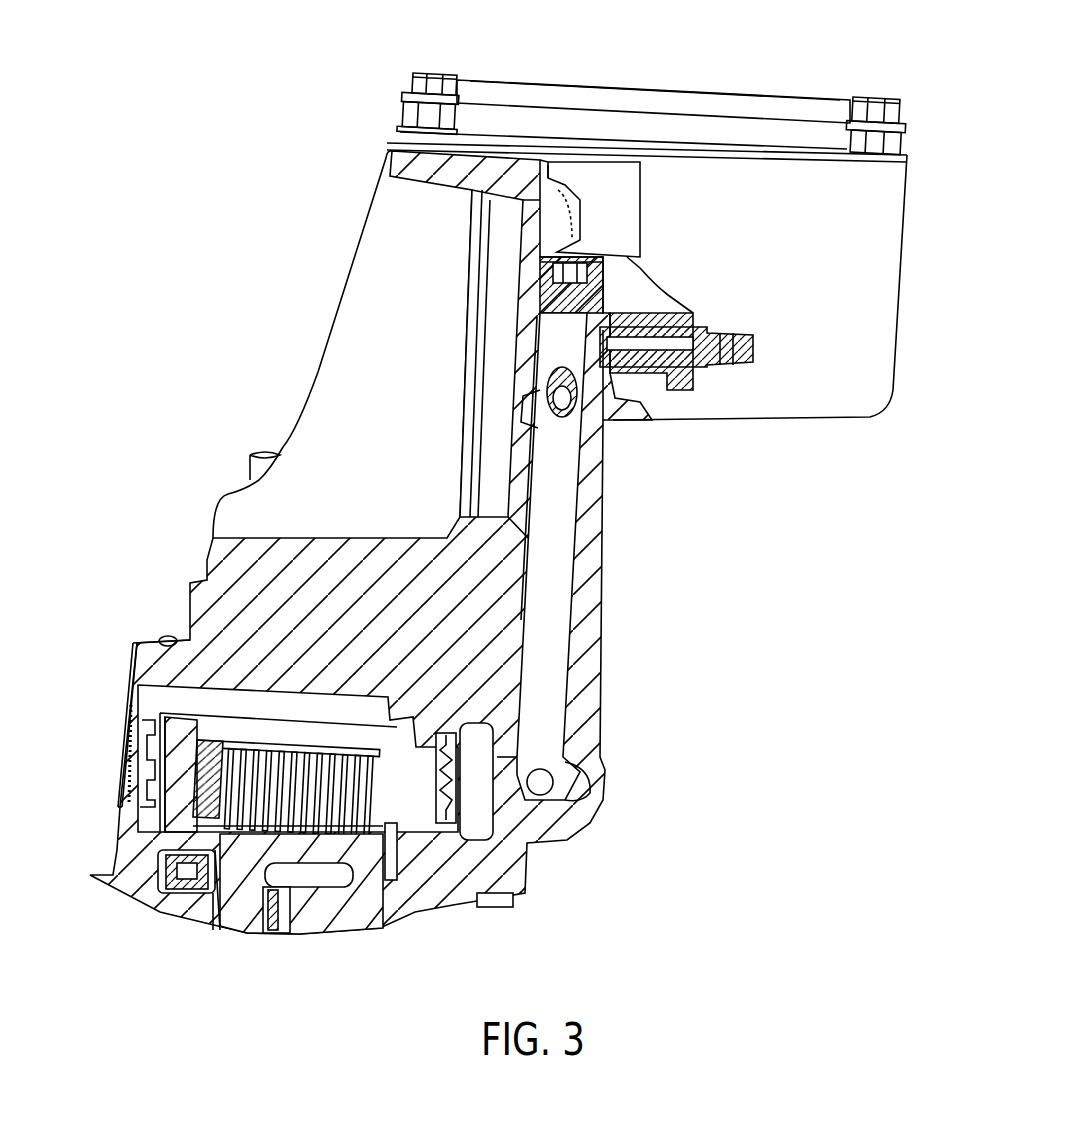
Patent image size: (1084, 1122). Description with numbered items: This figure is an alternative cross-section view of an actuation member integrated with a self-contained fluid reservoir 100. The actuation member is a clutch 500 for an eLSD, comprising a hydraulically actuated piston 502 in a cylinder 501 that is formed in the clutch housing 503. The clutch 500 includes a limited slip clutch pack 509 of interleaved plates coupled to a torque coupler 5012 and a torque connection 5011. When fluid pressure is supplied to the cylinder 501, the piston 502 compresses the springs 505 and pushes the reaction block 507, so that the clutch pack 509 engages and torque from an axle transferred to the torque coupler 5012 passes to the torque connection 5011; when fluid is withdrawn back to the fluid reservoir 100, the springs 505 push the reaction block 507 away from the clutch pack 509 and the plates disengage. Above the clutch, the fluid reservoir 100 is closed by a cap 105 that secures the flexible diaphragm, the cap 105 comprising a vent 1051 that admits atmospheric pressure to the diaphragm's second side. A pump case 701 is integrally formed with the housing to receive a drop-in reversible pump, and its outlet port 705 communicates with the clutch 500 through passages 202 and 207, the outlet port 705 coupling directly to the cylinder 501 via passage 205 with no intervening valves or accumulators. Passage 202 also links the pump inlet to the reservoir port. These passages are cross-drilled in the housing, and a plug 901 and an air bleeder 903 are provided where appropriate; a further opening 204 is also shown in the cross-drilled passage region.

The fluid reservoir 100 is at (918, 230).
The cap 105 is at (489, 78).
The vent 1051 is at (661, 103).
The passage 202 is at (583, 363).
The through hole 204 is at (575, 397).
The passage 205 is at (604, 534).
The passage 207 is at (557, 788).
The clutch 500 is at (128, 690).
The cylinder 501 is at (520, 703).
The piston 502 is at (460, 853).
The clutch housing 503 is at (527, 880).
The springs 505 is at (447, 840).
The reaction block 507 is at (400, 840).
The clutch pack 509 is at (262, 745).
The torque connection 5011 is at (143, 895).
The torque coupler 5012 is at (243, 934).
The pump case 701 is at (335, 538).
The outlet port 705 is at (522, 428).
The plugs 901 is at (600, 272).
The air bleeders 903 is at (704, 327).